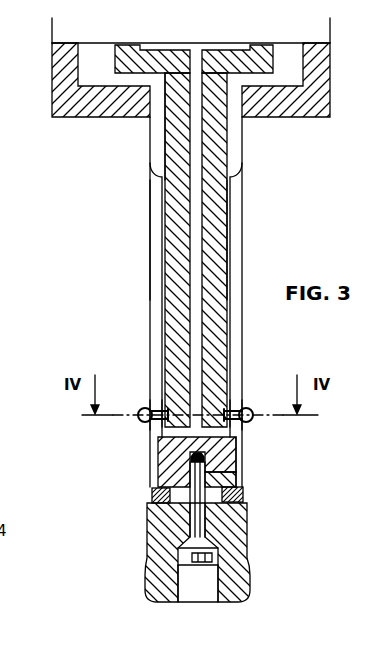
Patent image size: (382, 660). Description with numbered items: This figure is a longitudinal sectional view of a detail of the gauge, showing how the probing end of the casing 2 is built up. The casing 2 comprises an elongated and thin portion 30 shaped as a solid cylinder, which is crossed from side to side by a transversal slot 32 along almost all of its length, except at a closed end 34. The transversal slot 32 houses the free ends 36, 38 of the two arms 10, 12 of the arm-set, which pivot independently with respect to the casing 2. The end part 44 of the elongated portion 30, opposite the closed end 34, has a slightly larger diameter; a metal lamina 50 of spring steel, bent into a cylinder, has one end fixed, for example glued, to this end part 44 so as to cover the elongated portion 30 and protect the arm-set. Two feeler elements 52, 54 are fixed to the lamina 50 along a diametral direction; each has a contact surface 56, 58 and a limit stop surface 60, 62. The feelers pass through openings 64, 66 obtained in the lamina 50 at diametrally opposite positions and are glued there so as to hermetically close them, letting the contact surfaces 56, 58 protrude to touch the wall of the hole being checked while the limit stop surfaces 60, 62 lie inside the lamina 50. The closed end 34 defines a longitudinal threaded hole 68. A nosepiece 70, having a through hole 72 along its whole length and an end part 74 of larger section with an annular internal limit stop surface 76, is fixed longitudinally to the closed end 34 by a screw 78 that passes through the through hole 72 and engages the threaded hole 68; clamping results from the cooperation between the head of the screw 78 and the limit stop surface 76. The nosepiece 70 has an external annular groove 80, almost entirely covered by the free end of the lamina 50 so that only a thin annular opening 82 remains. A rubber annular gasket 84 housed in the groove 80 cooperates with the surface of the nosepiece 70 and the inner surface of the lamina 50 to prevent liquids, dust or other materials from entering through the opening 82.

The casing 2 is at (55, 118).
The arm 10 is at (274, 56).
The arm 12 is at (128, 64).
The elongated portion 30 is at (232, 215).
The transversal slot 32 is at (243, 447).
The closed end 34 is at (165, 447).
The free end 36 is at (215, 235).
The free end 38 is at (172, 291).
The end part 44 is at (172, 135).
The metal lamina 50 is at (148, 212).
The feeler element 52 is at (254, 414).
The feeler element 54 is at (147, 425).
The contact surface 56 is at (250, 425).
The contact surface 58 is at (148, 400).
The limit stop surface 60 is at (240, 400).
The limit stop surface 62 is at (152, 400).
The opening 64 is at (247, 402).
The opening 66 is at (157, 403).
The threaded hole 68 is at (196, 462).
The nosepiece 70 is at (222, 545).
The through hole 72 is at (247, 582).
The end part 74 is at (185, 594).
The limit stop surface 76 is at (150, 520).
The screw 78 is at (212, 580).
The external annular groove 80 is at (245, 503).
The annular opening 82 is at (152, 495).
The annular gasket 84 is at (243, 494).